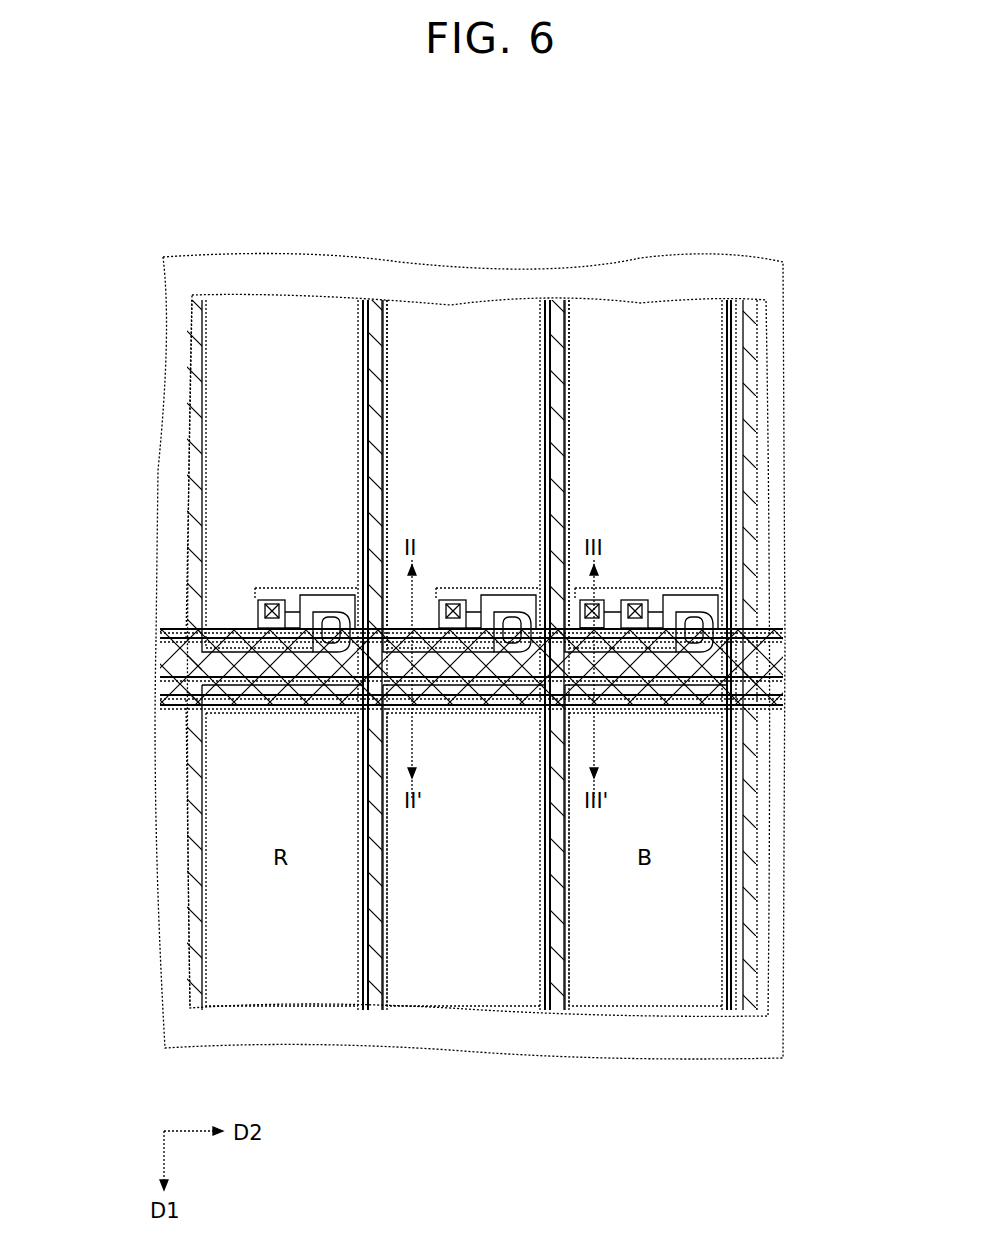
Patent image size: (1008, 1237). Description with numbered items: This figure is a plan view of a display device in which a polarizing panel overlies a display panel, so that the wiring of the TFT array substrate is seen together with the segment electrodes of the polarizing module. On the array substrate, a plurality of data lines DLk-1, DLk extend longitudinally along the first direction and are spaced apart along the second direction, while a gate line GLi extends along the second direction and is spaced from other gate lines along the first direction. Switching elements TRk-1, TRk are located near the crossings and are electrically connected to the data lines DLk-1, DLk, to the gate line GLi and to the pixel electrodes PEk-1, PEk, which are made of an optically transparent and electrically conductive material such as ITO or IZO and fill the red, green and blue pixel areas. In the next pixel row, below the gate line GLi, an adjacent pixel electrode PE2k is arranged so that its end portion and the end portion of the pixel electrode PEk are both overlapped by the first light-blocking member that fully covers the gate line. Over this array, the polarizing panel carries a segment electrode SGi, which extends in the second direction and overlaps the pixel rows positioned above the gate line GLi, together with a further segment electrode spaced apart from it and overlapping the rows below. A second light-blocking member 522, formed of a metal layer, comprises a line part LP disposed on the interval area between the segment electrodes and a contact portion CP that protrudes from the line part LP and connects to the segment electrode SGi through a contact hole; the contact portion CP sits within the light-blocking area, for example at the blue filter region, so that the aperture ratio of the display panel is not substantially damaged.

The data line DLk-1 is at (371, 303).
The data line DLk is at (551, 300).
The pixel electrode PEk-1 is at (205, 355).
The pixel electrode PEk is at (560, 343).
The 2k-th pixel electrode PE2k is at (548, 912).
The segment electrode SGi is at (160, 447).
The gate line GLi is at (760, 690).
The switching element TRk-1 is at (318, 713).
The switching element TRk is at (503, 713).
The contact portion CP is at (600, 598).
The line part LP is at (755, 630).
The second light-blocking member 522 is at (840, 545).